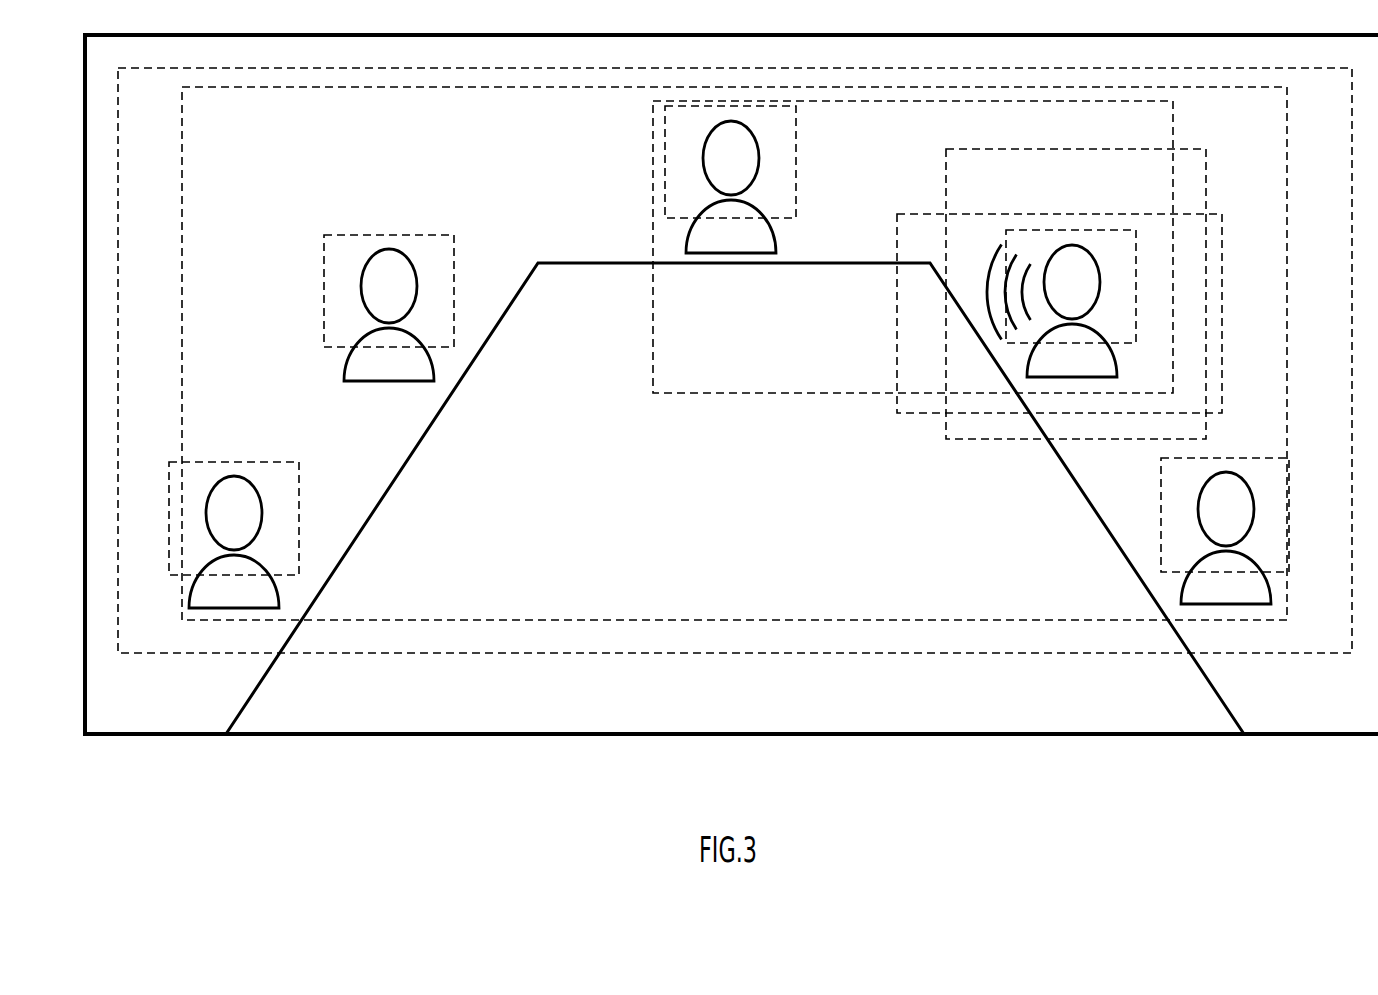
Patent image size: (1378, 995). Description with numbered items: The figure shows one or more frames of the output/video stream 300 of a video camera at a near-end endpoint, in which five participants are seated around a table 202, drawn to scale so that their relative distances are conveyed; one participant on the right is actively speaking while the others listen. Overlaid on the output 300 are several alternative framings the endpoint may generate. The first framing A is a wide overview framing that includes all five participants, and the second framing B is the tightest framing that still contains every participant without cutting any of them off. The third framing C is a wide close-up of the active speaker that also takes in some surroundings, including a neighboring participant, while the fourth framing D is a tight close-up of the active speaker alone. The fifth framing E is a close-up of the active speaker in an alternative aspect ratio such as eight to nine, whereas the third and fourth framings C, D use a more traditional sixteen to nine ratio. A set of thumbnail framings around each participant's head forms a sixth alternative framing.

The output/video stream 300 is at (1088, 735).
The table 202 is at (773, 342).
The first framing A is at (438, 653).
The second framing B is at (483, 620).
The third framing C is at (758, 393).
The fourth framing D is at (922, 413).
The fifth framing E is at (1015, 440).